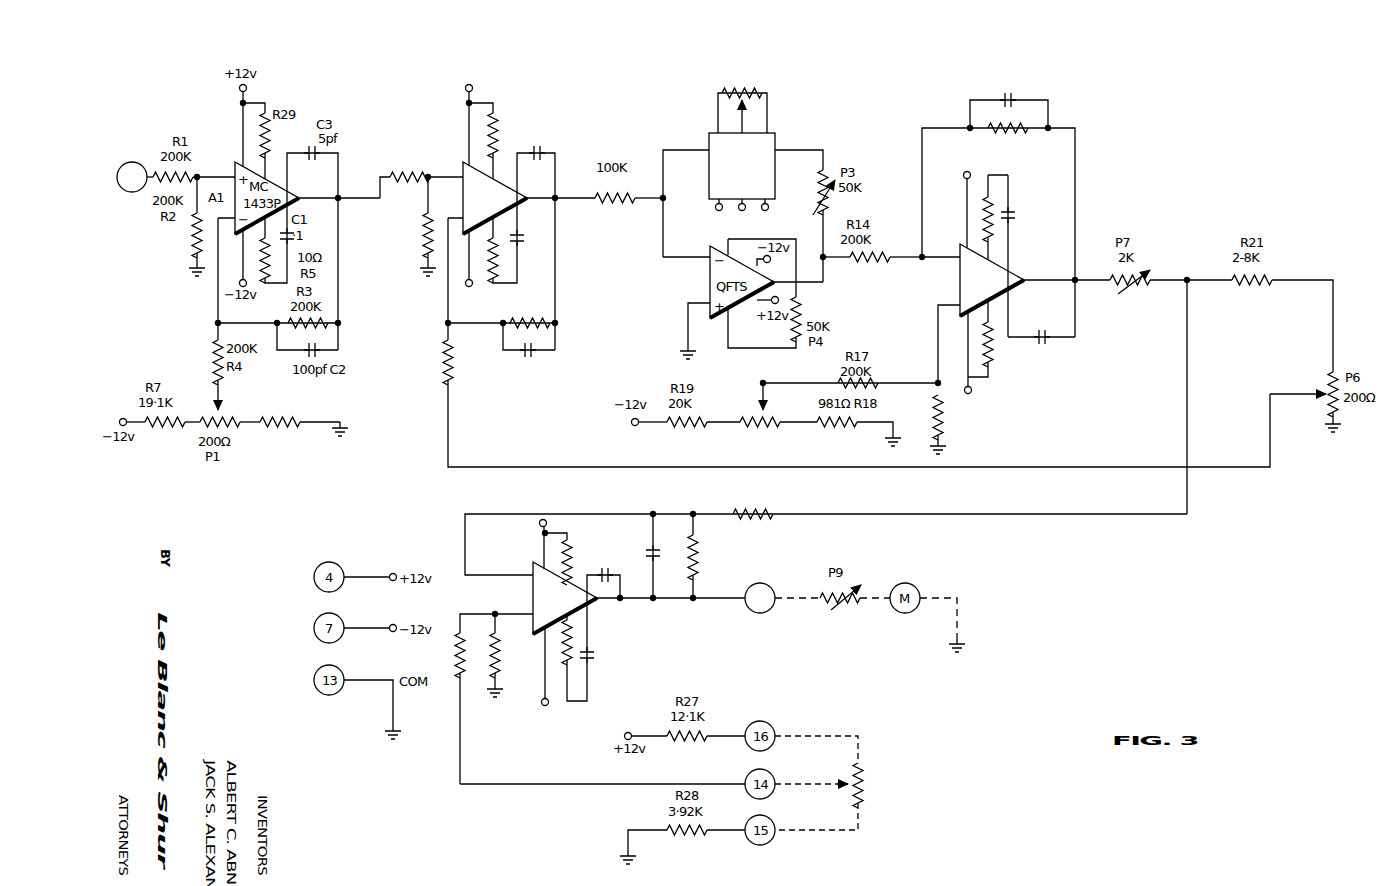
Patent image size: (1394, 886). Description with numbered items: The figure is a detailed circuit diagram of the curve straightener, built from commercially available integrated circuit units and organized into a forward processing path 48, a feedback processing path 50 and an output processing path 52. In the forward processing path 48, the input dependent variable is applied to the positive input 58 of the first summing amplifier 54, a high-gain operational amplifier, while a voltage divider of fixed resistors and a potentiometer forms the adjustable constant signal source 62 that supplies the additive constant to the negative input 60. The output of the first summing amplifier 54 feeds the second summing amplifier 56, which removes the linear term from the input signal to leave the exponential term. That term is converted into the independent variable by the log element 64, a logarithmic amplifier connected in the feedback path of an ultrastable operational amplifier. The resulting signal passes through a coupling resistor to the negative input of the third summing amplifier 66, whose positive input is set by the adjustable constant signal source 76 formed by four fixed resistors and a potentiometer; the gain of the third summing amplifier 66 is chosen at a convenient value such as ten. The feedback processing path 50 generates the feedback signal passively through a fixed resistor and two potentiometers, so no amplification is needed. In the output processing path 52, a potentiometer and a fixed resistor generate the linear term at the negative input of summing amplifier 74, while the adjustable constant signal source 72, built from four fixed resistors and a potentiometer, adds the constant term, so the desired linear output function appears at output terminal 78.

The forward processing path 48 is at (471, 229).
The feedback processing path 50 is at (993, 467).
The output processing path 52 is at (805, 635).
The first summing amplifier 54 is at (303, 201).
The second summing amplifier 56 is at (531, 199).
The positive input 58 is at (147, 180).
The negative input 60 is at (228, 222).
The adjustable constant signal source 62 is at (277, 432).
The logarithmic function generator (log element) 64 is at (721, 151).
The third summing amplifier 66 is at (953, 240).
The adjustable constant signal source 72 is at (840, 783).
The summing amplifier 74 is at (598, 606).
The adjustable constant signal source 76 is at (787, 432).
The output terminal 78 is at (725, 602).